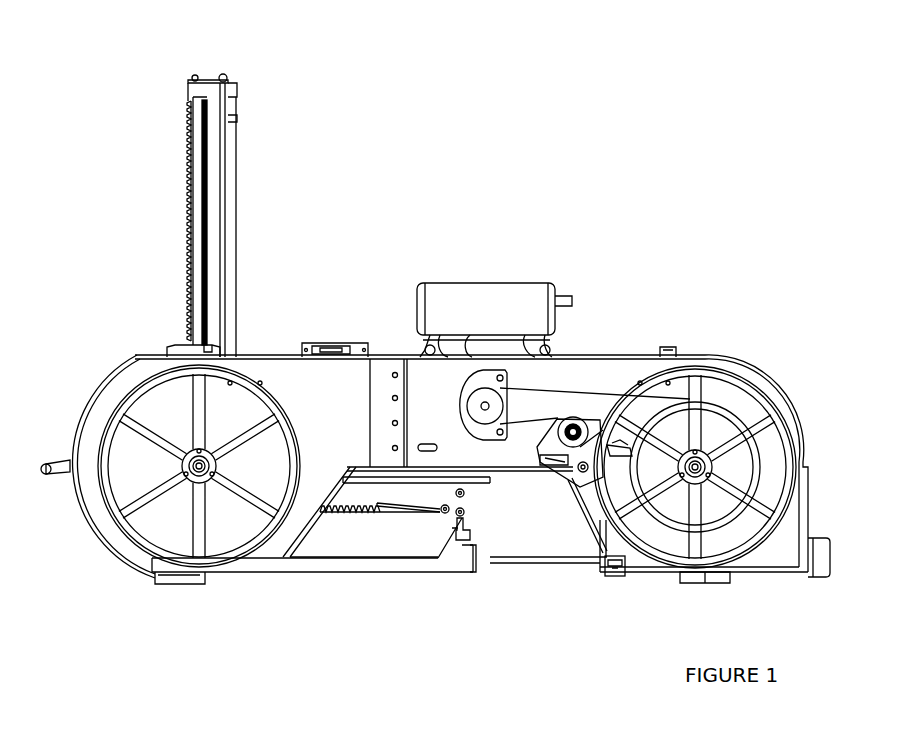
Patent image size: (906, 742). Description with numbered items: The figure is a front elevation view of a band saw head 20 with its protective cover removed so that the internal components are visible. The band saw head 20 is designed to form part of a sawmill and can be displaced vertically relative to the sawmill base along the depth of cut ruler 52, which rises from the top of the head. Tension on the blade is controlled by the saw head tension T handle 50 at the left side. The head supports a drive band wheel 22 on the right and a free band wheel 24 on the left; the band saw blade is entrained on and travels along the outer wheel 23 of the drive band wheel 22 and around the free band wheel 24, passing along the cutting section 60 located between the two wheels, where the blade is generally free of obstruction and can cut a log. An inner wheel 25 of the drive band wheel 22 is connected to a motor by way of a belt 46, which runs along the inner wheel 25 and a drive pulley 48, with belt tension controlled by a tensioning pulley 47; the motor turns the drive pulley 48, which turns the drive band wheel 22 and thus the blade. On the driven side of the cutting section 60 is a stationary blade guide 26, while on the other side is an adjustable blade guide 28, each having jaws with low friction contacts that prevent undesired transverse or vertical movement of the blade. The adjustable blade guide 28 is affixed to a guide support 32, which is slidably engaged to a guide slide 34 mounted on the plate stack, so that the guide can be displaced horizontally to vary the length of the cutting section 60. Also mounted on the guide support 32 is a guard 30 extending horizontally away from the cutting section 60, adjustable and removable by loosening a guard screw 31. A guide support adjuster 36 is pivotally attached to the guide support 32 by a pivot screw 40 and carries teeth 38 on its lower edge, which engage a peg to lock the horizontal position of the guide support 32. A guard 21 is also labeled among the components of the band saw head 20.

The band saw head 20 is at (612, 344).
The guard 21 is at (283, 378).
The drive band wheel 22 is at (742, 372).
The outer wheel 23 is at (783, 437).
The free band wheel 24 is at (120, 412).
The inner wheel 25 is at (760, 467).
The stationary blade guide 26 is at (615, 578).
The adjustable blade guide 28 is at (474, 577).
The guard 30 is at (432, 565).
The guard screw 31 is at (472, 536).
The guide support 32 is at (474, 497).
The guide slide 34 is at (490, 483).
The guide support adjuster 36 is at (378, 513).
The teeth 38 is at (342, 515).
The pivot screw 40 is at (442, 514).
The belt 46 is at (544, 389).
The tensioning pulley 47 is at (564, 422).
The drive pulley 48 is at (473, 417).
The saw head tension T handle 50 is at (44, 463).
The depth of cut ruler 52 is at (193, 197).
The cutting section 60 is at (598, 581).